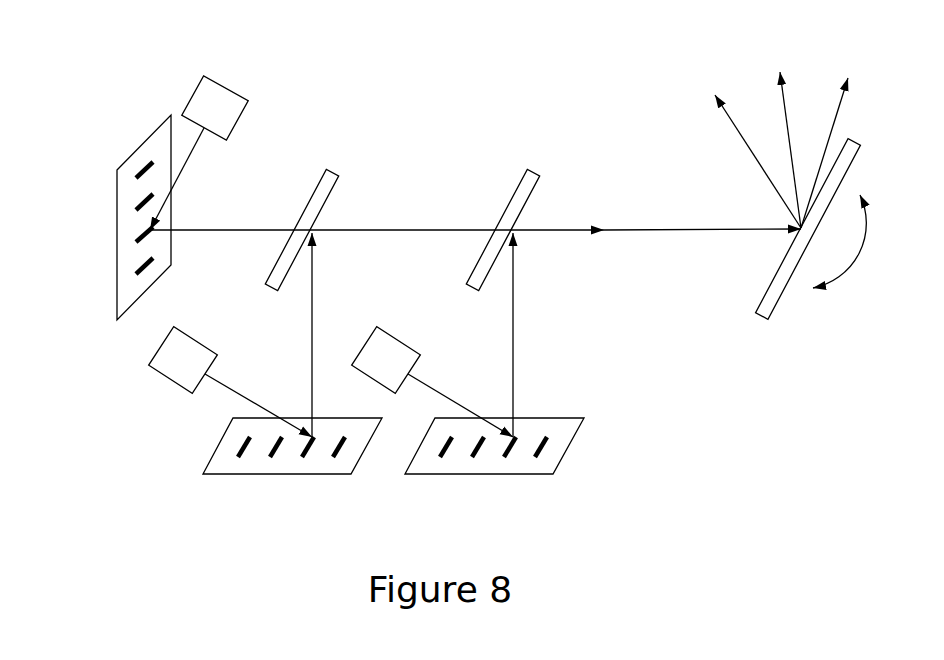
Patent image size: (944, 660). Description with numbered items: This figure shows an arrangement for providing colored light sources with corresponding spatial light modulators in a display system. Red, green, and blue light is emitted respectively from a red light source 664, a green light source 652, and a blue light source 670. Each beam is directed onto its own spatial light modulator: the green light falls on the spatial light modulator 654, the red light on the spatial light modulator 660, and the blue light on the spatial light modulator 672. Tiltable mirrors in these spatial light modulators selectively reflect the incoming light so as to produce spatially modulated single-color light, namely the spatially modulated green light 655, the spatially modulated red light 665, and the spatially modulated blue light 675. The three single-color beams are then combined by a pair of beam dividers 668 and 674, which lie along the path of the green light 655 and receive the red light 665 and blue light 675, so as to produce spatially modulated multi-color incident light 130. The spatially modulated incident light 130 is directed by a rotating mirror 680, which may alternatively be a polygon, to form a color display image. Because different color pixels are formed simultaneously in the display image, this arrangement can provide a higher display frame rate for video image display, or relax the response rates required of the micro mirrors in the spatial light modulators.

The green light source 652 is at (232, 86).
The spatial light modulator 654 is at (116, 237).
The spatially modulated color light 655 is at (377, 212).
The spatially modulated multi-color incident light 130 is at (702, 208).
The beam divider 668 is at (337, 165).
The beam divider 674 is at (538, 165).
The red light source 664 is at (200, 335).
The spatially modulated color light 665 is at (340, 335).
The spatial light modulator 660 is at (287, 477).
The blue light source 670 is at (402, 335).
The spatially modulated color light 675 is at (540, 335).
The spatial light modulator 672 is at (472, 475).
The rotating mirror 680 is at (785, 305).